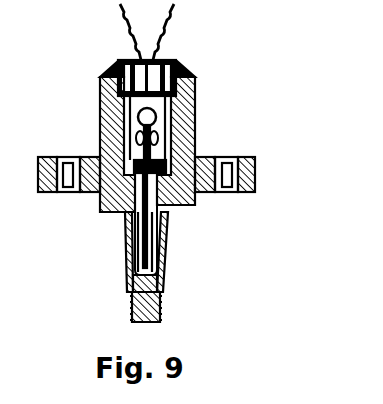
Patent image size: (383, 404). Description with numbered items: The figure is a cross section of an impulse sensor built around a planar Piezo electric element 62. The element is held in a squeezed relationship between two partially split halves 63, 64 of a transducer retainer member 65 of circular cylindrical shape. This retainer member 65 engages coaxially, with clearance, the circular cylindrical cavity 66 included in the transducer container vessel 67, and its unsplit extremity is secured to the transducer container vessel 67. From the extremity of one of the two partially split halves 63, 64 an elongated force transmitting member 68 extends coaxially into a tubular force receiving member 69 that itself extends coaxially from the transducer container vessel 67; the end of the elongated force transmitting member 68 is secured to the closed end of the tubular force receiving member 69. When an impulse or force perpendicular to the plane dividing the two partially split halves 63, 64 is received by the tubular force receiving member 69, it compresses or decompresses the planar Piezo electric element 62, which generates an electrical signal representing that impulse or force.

The planar Piezo electric element 62 is at (197, 190).
The partially split half 63 is at (100, 153).
The partially split half 64 is at (197, 128).
The transducer retainer member 65 is at (197, 97).
The circular cylindrical cavity 66 is at (100, 110).
The transducer container vessel 67 is at (100, 195).
The elongated force transmitting member 68 is at (166, 250).
The tubular force receiving member 69 is at (127, 250).